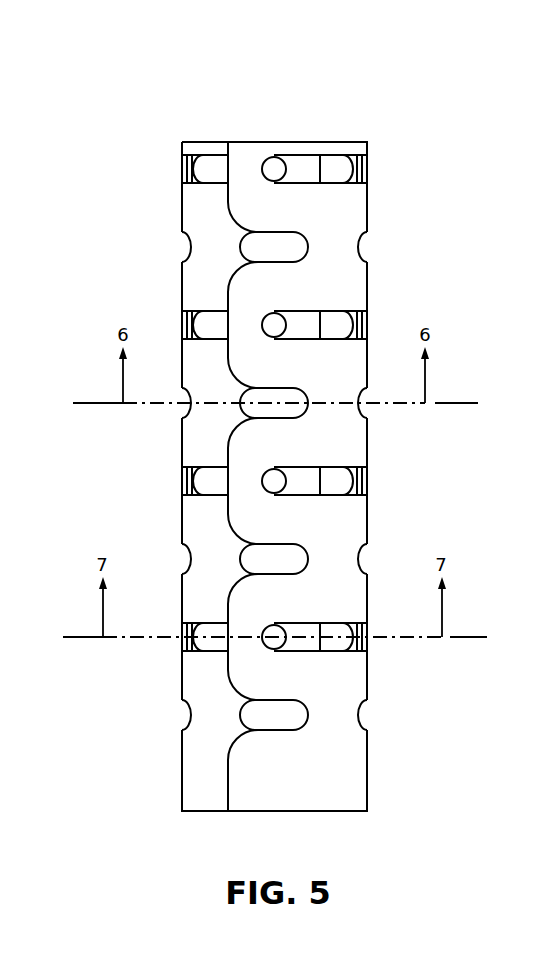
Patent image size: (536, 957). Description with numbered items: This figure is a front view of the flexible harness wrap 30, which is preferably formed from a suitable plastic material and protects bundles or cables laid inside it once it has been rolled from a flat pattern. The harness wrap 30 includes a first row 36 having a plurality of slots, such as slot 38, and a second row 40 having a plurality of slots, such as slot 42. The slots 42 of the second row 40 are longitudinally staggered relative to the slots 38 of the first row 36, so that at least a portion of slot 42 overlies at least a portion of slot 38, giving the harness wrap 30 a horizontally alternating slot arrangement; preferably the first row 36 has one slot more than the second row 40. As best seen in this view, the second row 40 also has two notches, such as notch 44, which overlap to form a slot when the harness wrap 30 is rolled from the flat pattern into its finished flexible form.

The harness wrap 30 is at (260, 122).
The first row 36 is at (477, 635).
The slot 38 is at (332, 163).
The second row 40 is at (468, 404).
The slot 42 is at (190, 248).
The notch 44 is at (253, 248).